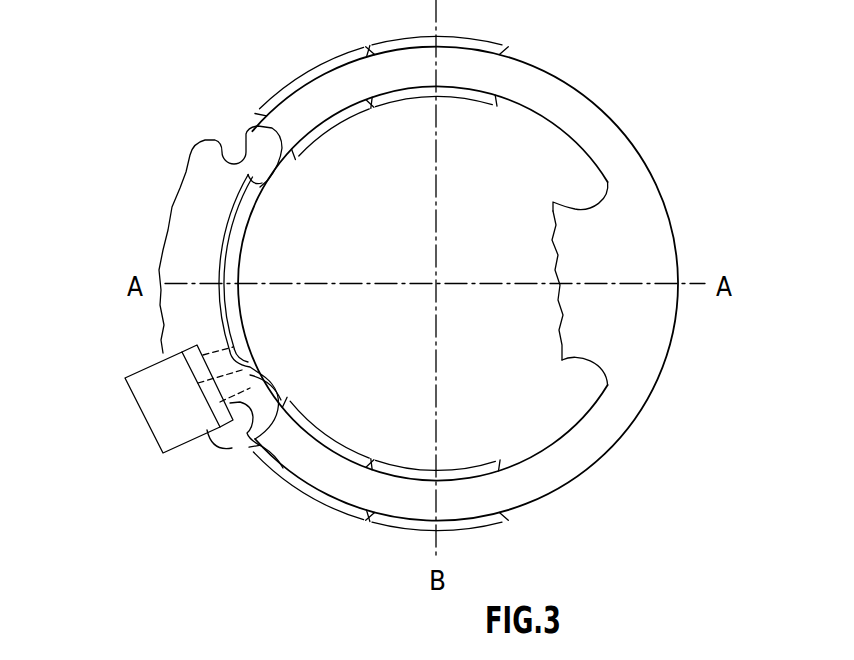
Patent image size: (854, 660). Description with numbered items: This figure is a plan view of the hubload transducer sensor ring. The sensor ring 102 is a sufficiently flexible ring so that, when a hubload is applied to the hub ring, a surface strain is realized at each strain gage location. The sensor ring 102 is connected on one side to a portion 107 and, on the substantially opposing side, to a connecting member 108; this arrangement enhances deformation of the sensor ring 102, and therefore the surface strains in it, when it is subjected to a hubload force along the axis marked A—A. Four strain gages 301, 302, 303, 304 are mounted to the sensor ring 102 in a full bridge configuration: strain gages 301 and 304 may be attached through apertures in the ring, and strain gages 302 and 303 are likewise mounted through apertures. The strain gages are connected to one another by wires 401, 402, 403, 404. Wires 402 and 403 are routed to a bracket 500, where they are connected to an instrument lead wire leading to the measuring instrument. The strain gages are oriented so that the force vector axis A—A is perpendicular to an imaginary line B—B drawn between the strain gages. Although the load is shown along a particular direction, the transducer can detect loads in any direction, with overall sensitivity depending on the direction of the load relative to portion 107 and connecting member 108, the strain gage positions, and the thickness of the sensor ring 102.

The sensor ring 102 is at (633, 165).
The portion 107 is at (192, 188).
The connecting member 108 is at (576, 337).
The strain gage 301 is at (399, 38).
The strain gage 302 is at (409, 98).
The strain gage 303 is at (480, 462).
The strain gage 304 is at (467, 526).
The wire 401 is at (291, 82).
The wire 402 is at (297, 151).
The wire 403 is at (303, 423).
The wire 404 is at (303, 484).
The bracket 500 is at (175, 355).